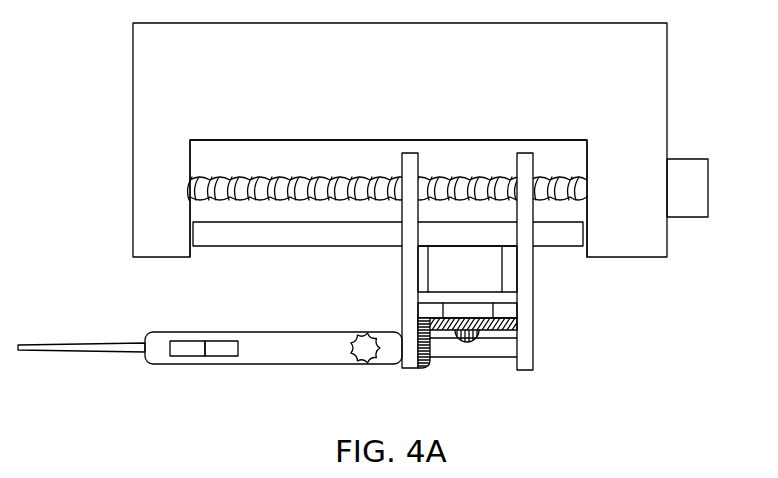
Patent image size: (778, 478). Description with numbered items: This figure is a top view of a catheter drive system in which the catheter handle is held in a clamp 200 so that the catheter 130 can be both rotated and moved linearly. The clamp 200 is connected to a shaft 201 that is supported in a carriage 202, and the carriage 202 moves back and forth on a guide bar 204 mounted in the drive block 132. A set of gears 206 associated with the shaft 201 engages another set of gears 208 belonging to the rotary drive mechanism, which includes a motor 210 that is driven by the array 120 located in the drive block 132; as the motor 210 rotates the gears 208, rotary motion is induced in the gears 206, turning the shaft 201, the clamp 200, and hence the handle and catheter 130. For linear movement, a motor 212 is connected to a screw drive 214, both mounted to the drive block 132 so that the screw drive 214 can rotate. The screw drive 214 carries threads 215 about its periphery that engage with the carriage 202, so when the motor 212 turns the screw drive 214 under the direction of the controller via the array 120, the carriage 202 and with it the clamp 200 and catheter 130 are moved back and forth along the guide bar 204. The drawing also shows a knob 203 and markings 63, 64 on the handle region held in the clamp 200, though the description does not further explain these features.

The array 120 is at (445, 68).
The drive block 132 is at (388, 198).
The motor 212 is at (697, 158).
The screw drive 214 is at (249, 177).
The threads 215 is at (387, 153).
The guide bar 204 is at (227, 247).
The shaft 201 is at (490, 358).
The carriage 202 is at (523, 152).
The motor 210 is at (482, 271).
The gears 208 is at (517, 327).
The gears 206 is at (423, 370).
The clamp 200 is at (310, 366).
The first marker 63 is at (188, 357).
The second marker 64 is at (228, 357).
The knob 203 is at (365, 330).
The catheter 130 is at (68, 354).